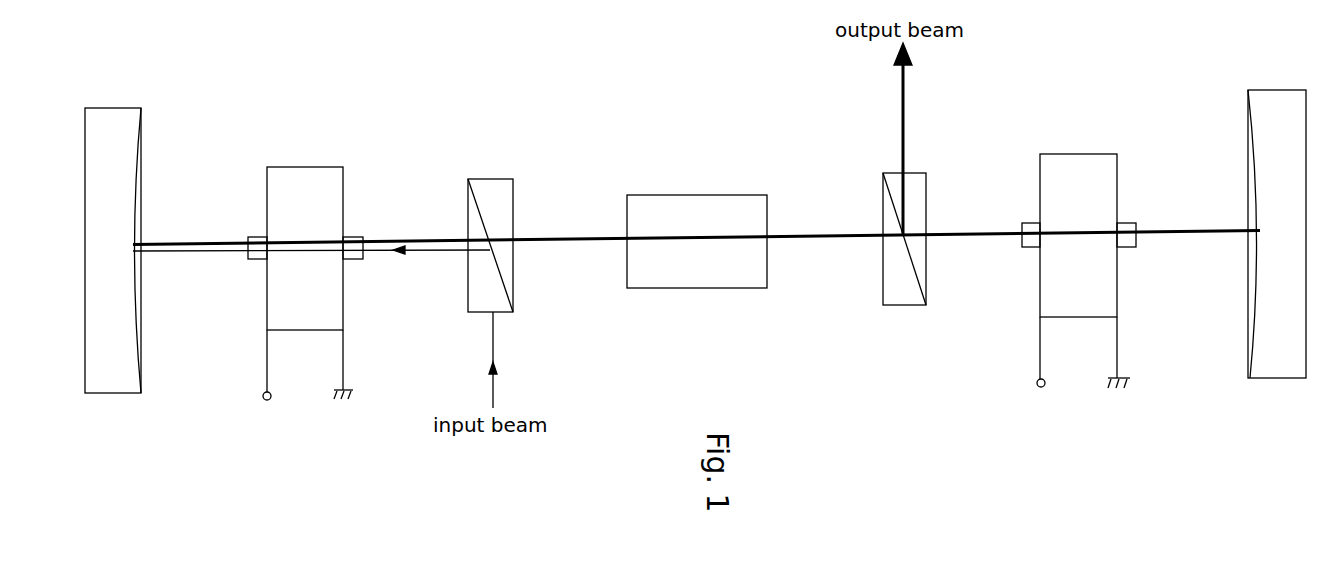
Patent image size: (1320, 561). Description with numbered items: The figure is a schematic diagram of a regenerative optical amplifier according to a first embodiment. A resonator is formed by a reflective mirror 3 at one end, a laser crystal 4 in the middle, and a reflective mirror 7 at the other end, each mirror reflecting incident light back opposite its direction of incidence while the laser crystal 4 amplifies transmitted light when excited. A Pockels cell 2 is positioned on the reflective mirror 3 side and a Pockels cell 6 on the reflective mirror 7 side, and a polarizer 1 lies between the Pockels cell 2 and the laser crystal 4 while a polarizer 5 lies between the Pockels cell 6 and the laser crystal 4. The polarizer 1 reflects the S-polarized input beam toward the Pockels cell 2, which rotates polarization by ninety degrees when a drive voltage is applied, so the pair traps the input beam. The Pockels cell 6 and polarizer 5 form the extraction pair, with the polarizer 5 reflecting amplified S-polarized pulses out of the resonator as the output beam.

The polarizer 1 is at (485, 179).
The Pockels cell 2 is at (297, 167).
The reflective mirror 3 is at (112, 108).
The laser crystal 4 is at (690, 195).
The polarizer 5 is at (918, 173).
The Pockels cell 6 is at (1075, 154).
The reflective mirror 7 is at (1266, 90).